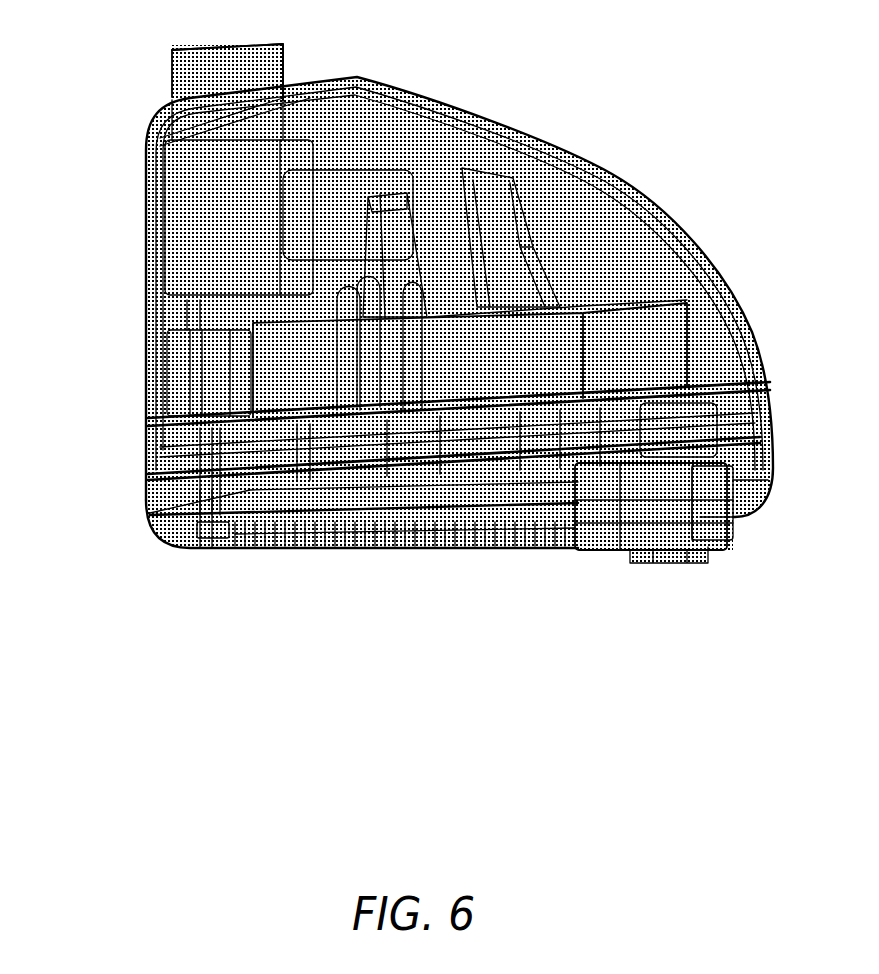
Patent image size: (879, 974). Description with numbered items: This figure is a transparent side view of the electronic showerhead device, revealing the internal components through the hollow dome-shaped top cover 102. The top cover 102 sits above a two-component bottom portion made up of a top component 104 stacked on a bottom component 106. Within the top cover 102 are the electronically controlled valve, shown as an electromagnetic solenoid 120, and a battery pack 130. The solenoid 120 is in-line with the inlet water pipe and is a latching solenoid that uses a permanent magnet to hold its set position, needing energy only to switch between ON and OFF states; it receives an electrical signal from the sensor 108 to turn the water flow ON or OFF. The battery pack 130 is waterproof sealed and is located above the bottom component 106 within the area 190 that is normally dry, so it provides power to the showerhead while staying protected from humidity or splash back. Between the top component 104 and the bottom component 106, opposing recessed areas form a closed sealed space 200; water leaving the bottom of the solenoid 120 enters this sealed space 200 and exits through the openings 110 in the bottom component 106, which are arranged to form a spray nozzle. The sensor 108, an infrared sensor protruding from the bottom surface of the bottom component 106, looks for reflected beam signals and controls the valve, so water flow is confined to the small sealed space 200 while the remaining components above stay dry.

The hollow dome-shaped top cover 102 is at (607, 183).
The area 190 is at (457, 153).
The electromagnetic solenoid 120 is at (340, 190).
The battery pack 130 is at (645, 300).
The top component 104 is at (142, 467).
The closed sealed space 200 is at (155, 538).
The bottom component 106 is at (184, 533).
The openings 110 is at (333, 553).
The sensor 108 is at (626, 552).